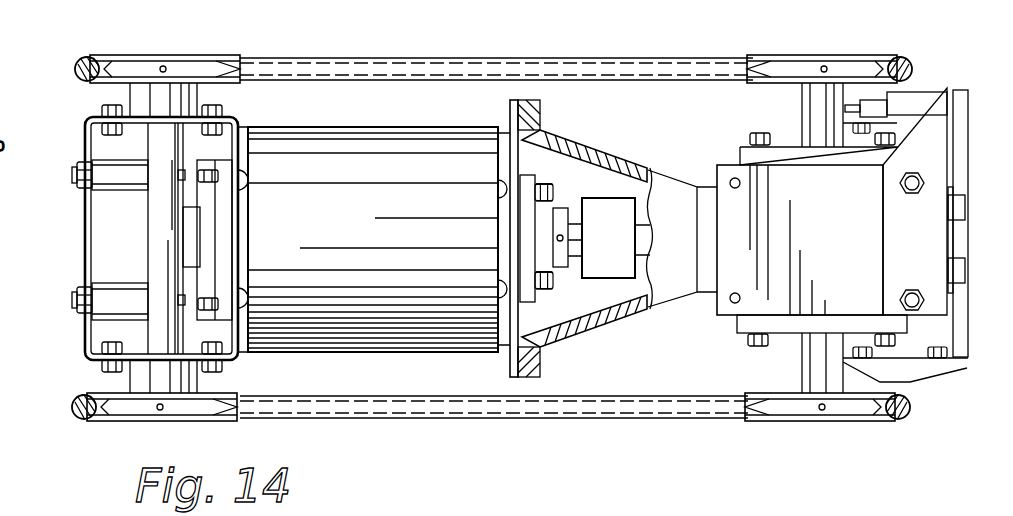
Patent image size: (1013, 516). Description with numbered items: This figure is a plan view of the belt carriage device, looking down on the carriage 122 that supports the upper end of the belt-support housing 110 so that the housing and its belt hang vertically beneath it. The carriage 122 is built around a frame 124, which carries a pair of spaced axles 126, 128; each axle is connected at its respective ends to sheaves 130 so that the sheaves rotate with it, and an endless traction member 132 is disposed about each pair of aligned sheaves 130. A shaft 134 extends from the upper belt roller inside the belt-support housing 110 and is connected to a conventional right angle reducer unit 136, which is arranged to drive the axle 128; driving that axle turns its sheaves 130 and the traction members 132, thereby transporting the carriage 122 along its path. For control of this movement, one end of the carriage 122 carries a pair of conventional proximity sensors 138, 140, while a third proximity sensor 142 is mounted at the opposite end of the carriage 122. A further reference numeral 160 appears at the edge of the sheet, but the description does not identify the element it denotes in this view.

The belt-support housing 110 is at (418, 352).
The carriage 122 is at (688, 426).
The frame 124 is at (238, 124).
The axle 126 is at (155, 218).
The axle 128 is at (806, 373).
The sheave 130 is at (166, 55).
The endless traction member 132 is at (473, 80).
The shaft 134 is at (506, 220).
The right angle reducer unit 136 is at (716, 175).
The proximity sensor 138 is at (112, 162).
The proximity sensor 140 is at (108, 318).
The proximity sensor 142 is at (953, 92).
The frame member 160 is at (765, 513).